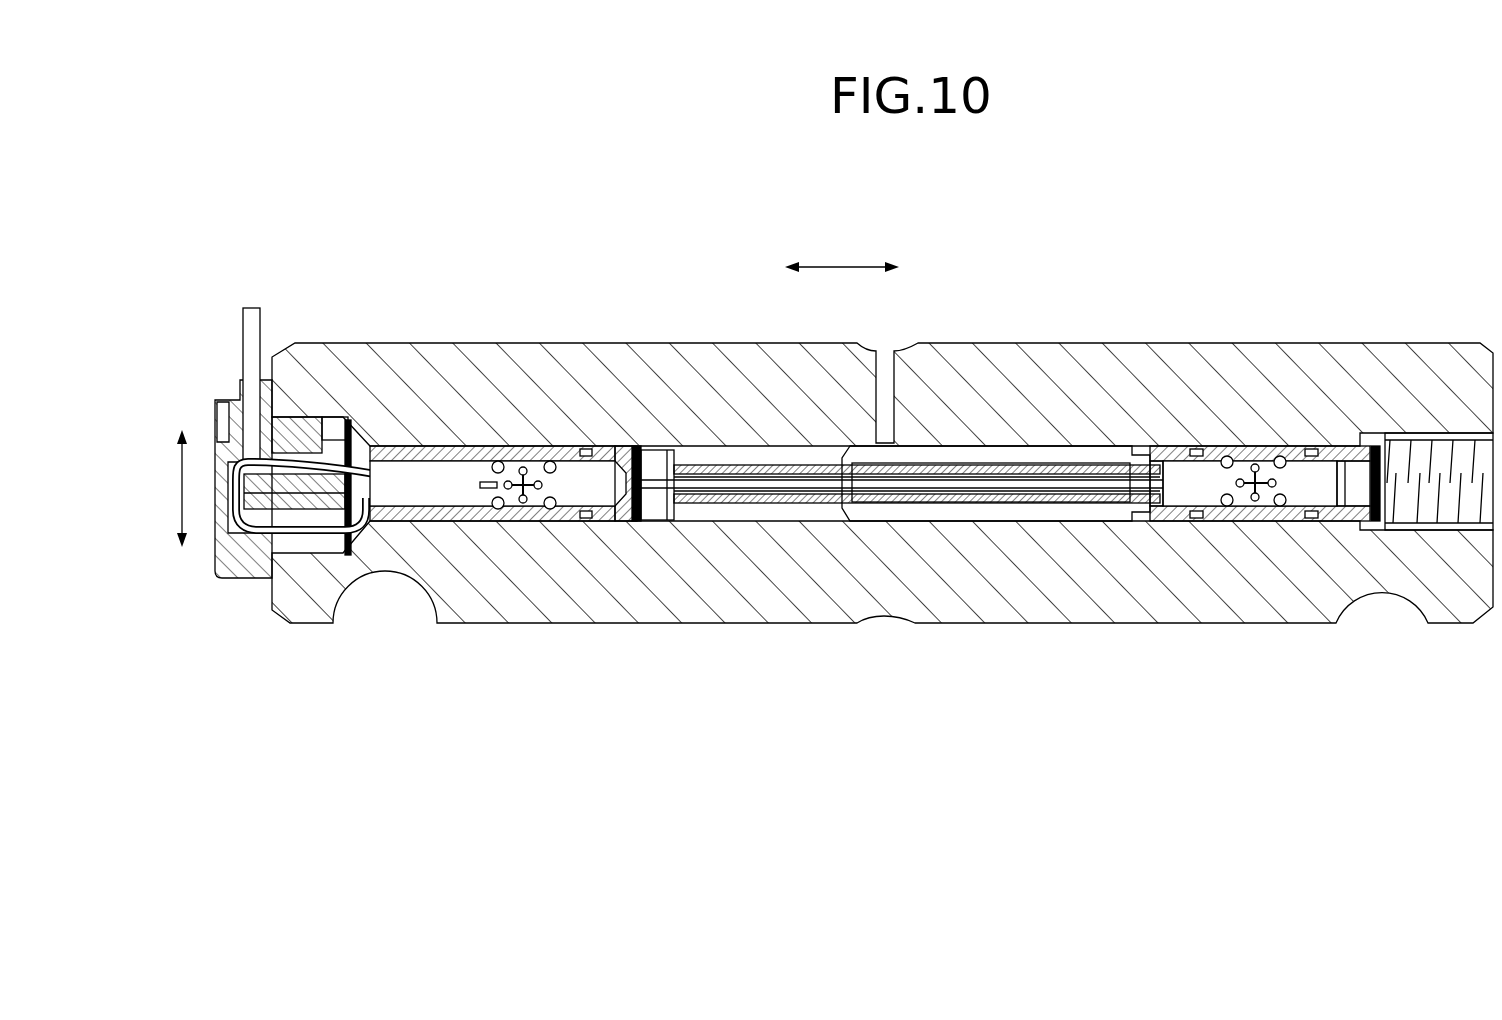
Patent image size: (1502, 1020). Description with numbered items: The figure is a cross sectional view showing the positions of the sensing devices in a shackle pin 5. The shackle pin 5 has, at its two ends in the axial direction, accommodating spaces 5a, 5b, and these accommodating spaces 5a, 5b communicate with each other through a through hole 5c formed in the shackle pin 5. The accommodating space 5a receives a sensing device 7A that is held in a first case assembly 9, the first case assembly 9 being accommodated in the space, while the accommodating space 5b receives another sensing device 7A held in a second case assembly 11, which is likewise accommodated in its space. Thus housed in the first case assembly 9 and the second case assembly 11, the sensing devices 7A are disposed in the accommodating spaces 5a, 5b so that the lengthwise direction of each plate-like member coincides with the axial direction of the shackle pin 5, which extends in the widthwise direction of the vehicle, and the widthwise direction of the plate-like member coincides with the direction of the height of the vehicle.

The shackle pin 5 is at (655, 343).
The accommodating space 5a is at (652, 510).
The accommodating space 5b is at (954, 510).
The through hole 5c is at (780, 503).
The sensing device 7A is at (570, 505).
The first case assembly 9 is at (530, 432).
The second case assembly 11 is at (1268, 432).